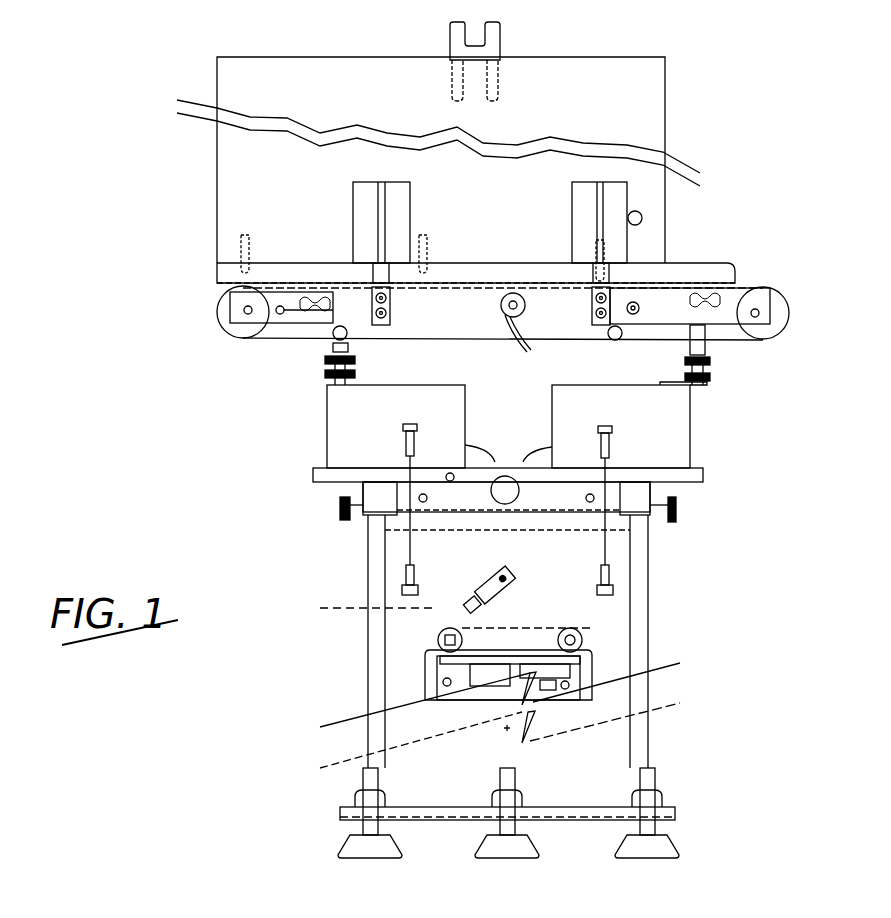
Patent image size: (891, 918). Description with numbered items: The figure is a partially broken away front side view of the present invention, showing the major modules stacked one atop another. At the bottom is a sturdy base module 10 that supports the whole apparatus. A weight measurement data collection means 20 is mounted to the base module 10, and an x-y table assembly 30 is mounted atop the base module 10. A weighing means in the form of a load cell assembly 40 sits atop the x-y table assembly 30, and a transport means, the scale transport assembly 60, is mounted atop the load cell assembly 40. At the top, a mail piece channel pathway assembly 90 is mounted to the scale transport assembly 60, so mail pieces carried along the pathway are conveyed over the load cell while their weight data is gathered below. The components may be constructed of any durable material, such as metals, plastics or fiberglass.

The mail piece channel pathway assembly 90 is at (790, 108).
The scale transport assembly 60 is at (748, 266).
The load cell assembly 40 is at (748, 430).
The x-y table assembly 30 is at (745, 492).
The weight measurement data collection means 20 is at (612, 628).
The base module 10 is at (693, 734).